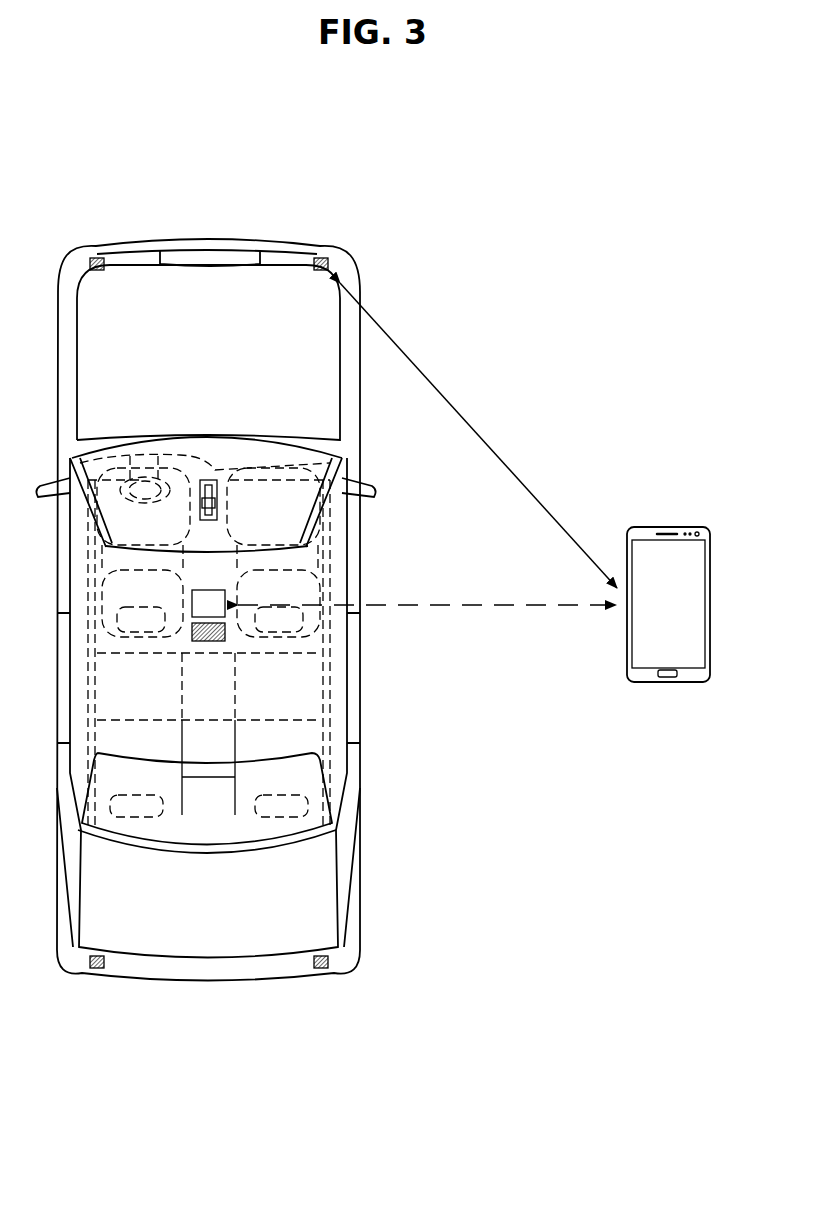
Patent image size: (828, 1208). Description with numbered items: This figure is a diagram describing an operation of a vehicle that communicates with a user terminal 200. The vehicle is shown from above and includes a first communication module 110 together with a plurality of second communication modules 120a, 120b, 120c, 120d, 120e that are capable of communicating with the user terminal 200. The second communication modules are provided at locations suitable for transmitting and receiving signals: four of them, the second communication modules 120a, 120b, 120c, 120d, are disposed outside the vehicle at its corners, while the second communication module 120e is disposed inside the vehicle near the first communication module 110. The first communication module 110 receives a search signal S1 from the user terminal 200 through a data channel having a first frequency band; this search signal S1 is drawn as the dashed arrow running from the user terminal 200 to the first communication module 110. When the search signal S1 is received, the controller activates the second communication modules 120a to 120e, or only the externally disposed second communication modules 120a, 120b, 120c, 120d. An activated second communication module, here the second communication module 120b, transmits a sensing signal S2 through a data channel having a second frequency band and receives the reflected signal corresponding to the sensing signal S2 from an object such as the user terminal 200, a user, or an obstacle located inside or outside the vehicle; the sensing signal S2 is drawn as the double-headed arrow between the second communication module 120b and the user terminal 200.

The first communication module 110 is at (210, 589).
The second communication module 120a is at (96, 257).
The second communication module 120b is at (318, 257).
The second communication module 120c is at (94, 969).
The second communication module 120d is at (320, 969).
The second communication module 120e is at (225, 634).
The user terminal 200 is at (668, 526).
The search signal S1 is at (452, 604).
The sensing signal S2 is at (478, 436).